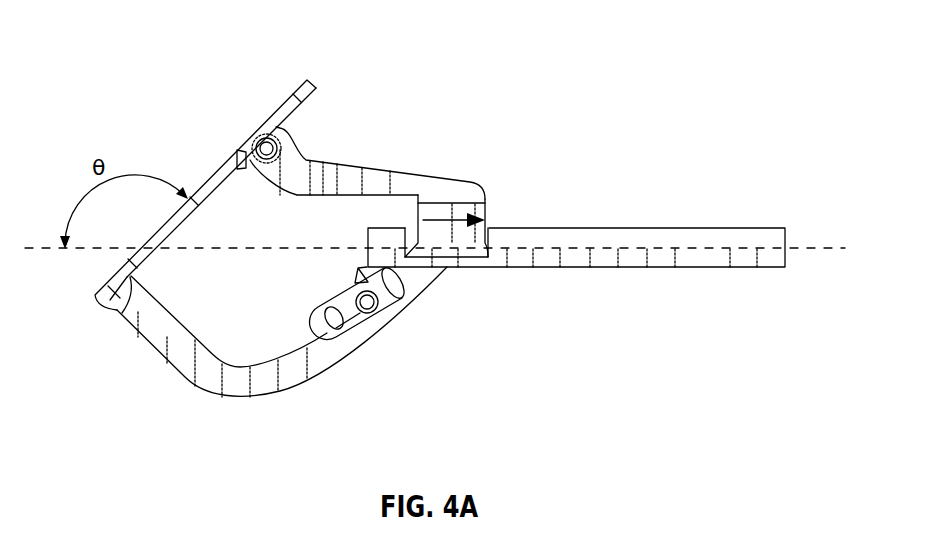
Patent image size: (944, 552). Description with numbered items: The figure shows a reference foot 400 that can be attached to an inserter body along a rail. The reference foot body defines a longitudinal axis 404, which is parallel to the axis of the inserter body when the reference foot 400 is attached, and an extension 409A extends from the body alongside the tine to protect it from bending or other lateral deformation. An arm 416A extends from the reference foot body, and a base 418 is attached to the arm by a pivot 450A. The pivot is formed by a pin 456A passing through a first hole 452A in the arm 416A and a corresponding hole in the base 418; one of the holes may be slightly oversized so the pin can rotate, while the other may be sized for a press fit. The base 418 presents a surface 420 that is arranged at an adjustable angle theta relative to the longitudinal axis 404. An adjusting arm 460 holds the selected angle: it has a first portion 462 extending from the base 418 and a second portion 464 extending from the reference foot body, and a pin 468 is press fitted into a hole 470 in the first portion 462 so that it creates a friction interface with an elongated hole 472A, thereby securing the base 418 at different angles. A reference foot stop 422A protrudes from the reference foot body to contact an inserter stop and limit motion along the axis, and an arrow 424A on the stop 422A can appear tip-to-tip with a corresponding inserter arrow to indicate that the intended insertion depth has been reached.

The reference foot 400 is at (730, 23).
The longitudinal axis 404 is at (824, 246).
The extension 409A is at (763, 238).
The arm 416A is at (345, 172).
The base 418 is at (291, 97).
The surface 420 is at (90, 283).
The reference foot stop 422A is at (442, 210).
The arrow 424A is at (458, 216).
The pivot 450A is at (234, 119).
The first hole 452A is at (256, 170).
The pin 456A is at (261, 155).
The adjusting arm 460 is at (425, 425).
The first portion 462 is at (157, 333).
The second portion 464 is at (358, 330).
The pin 468 is at (373, 312).
The hole 470 is at (356, 278).
The elongated hole 472A is at (336, 313).